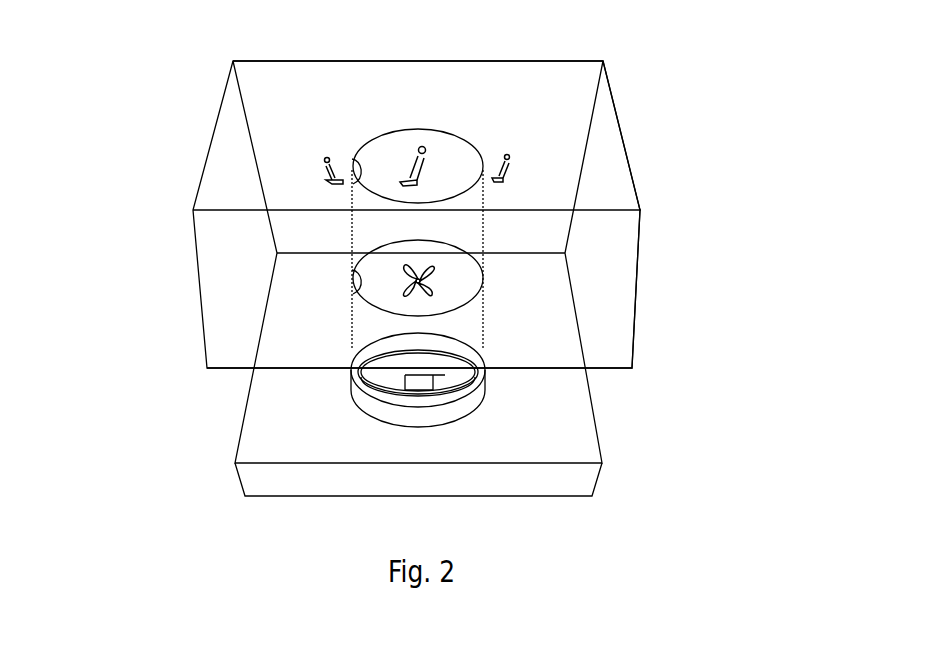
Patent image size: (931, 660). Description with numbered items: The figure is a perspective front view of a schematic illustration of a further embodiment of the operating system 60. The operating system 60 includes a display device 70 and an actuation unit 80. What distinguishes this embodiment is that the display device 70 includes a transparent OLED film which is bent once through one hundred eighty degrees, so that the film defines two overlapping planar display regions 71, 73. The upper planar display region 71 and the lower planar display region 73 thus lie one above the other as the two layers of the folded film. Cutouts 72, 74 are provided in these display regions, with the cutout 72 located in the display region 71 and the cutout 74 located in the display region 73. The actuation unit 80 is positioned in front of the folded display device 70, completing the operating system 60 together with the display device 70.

The operating system 60 is at (175, 88).
The display device 70 is at (694, 200).
The planar display region 71 is at (585, 159).
The cutout 72 is at (352, 187).
The planar display region 73 is at (635, 293).
The cutout 74 is at (352, 296).
The actuation unit 80 is at (481, 417).